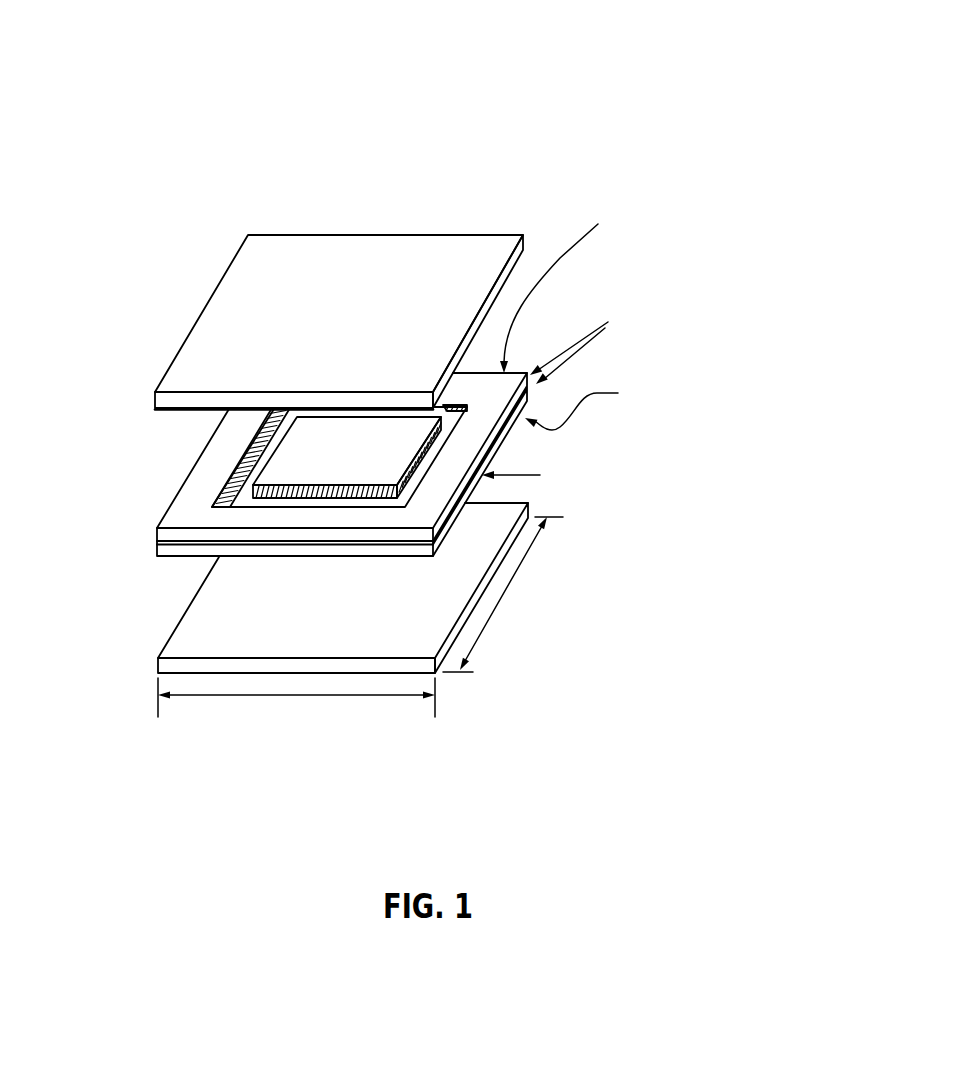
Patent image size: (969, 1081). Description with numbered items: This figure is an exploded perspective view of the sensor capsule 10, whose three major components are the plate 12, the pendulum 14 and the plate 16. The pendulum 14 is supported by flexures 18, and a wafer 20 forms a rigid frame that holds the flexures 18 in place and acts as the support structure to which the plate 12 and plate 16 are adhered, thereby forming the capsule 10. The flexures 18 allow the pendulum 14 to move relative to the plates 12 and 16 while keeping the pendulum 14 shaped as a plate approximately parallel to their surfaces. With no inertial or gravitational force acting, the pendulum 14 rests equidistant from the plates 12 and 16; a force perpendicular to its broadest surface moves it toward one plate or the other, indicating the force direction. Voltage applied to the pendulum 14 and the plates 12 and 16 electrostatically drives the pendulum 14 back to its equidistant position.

The sensor capsule 10 is at (428, 72).
The plate 12 is at (480, 235).
The pendulum 14 is at (353, 475).
The plate 16 is at (158, 663).
The flexures 18 is at (258, 416).
The wafer 20 is at (158, 528).